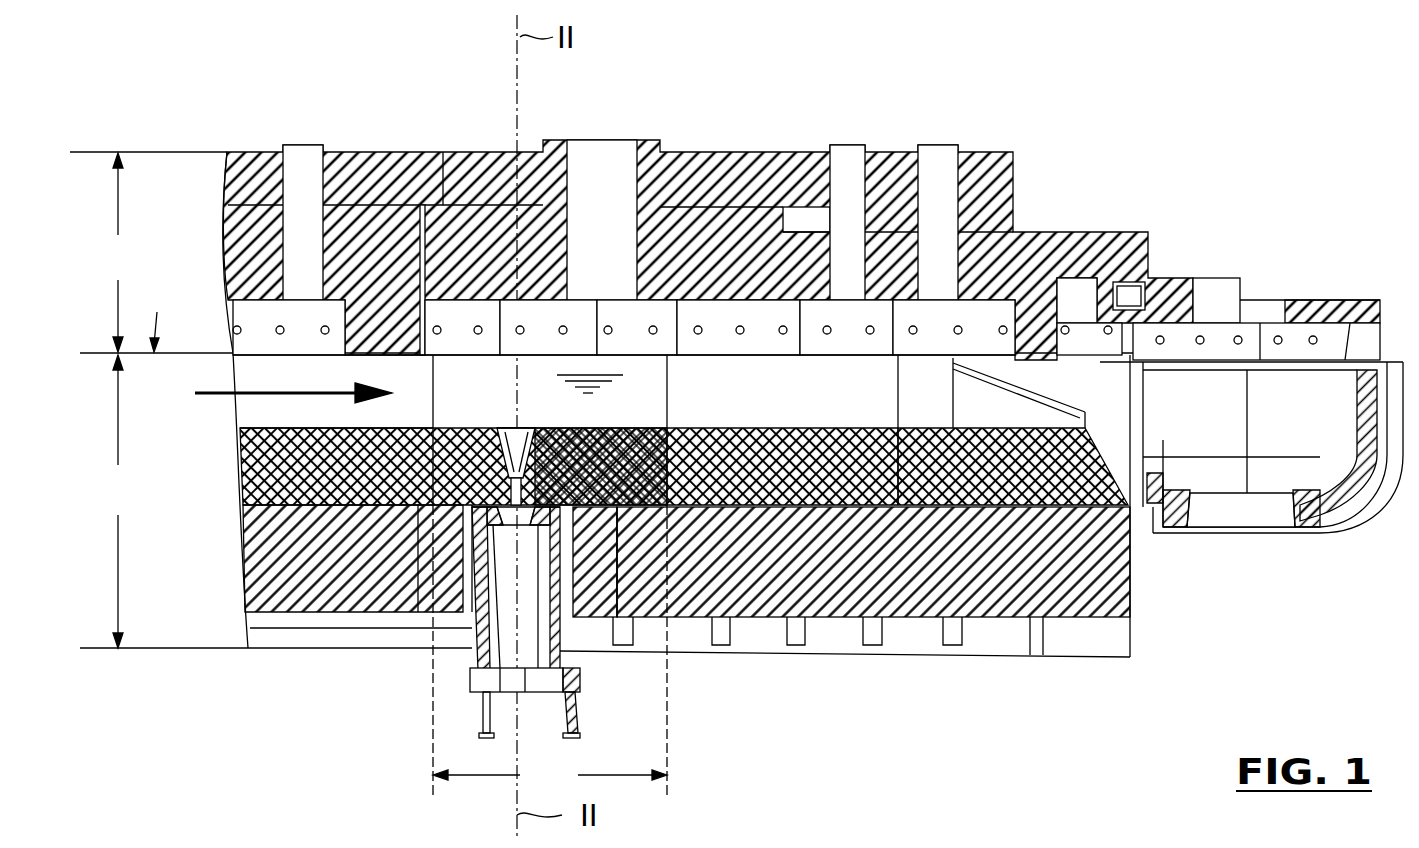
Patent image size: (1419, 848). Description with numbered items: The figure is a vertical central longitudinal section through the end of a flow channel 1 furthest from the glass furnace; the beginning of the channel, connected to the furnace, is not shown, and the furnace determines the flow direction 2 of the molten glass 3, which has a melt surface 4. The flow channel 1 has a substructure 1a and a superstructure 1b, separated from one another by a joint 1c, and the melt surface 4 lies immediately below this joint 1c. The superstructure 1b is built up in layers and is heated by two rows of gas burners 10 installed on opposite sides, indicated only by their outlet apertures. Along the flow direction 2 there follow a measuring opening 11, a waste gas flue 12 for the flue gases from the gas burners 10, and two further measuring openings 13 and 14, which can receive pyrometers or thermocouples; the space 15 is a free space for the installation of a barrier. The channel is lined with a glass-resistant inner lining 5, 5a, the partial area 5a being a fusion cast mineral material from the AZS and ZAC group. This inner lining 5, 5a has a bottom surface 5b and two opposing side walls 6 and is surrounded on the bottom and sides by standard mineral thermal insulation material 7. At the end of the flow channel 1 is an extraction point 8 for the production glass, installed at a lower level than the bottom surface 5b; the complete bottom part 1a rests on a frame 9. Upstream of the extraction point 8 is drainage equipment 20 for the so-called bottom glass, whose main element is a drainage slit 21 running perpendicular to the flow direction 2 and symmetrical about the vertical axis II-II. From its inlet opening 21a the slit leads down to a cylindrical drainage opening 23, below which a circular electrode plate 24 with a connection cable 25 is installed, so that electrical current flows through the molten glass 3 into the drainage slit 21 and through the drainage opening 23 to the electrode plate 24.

The flow channel 1 is at (1130, 79).
The substructure 1a is at (140, 507).
The superstructure 1b is at (130, 272).
The joint 1c is at (152, 313).
The flow direction 2 is at (194, 400).
The molten glass 3 is at (770, 419).
The melt surface 4 is at (590, 350).
The inner lining 5 is at (273, 470).
The inner lining partial area 5a is at (630, 456).
The bottom surface 5b is at (923, 422).
The side walls 6 is at (270, 409).
The thermal insulation material 7 is at (278, 552).
The extraction point 8 is at (1237, 548).
The frame 9 is at (1073, 630).
The gas burners 10 is at (275, 325).
The measuring opening 11 is at (293, 150).
The waste gas flue 12 is at (601, 178).
The measuring opening 13 is at (845, 160).
The measuring opening 14 is at (938, 168).
The space 15 is at (1073, 300).
The drainage equipment 20 is at (550, 651).
The drainage slit 21 is at (517, 447).
The inlet opening 21a is at (507, 418).
The drainage opening 23 is at (508, 532).
The electrode plate 24 is at (531, 524).
The connection cable 25 is at (493, 638).